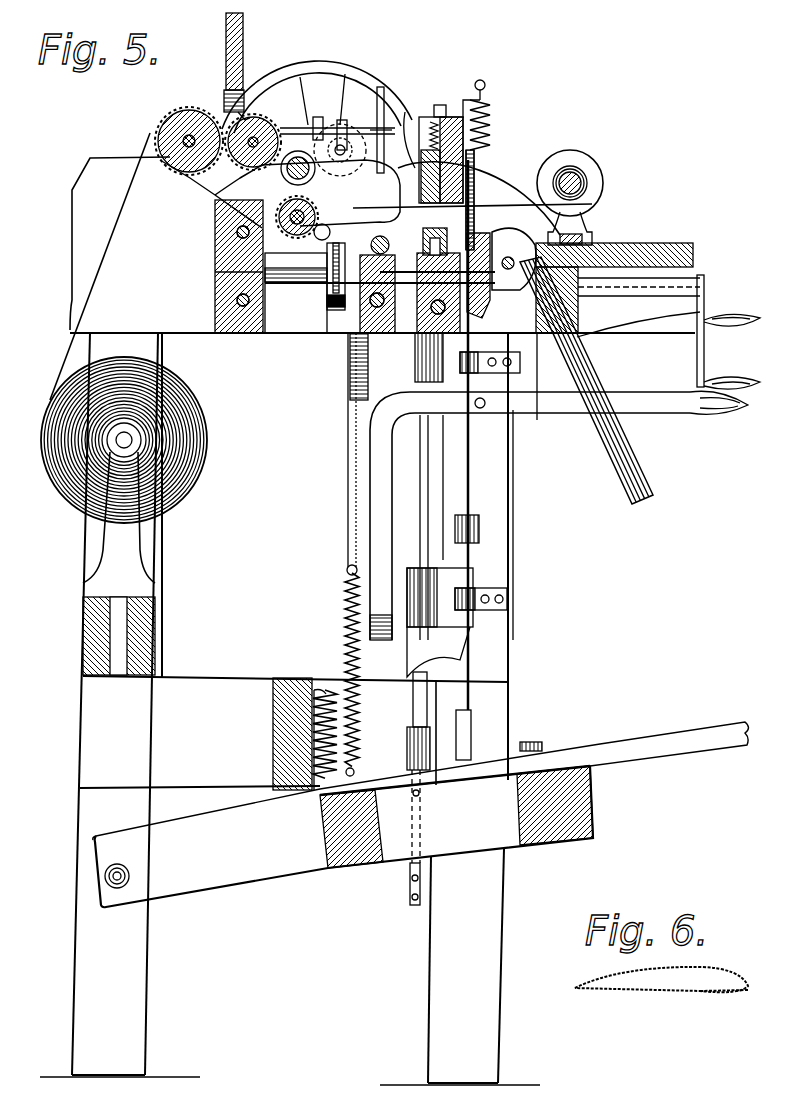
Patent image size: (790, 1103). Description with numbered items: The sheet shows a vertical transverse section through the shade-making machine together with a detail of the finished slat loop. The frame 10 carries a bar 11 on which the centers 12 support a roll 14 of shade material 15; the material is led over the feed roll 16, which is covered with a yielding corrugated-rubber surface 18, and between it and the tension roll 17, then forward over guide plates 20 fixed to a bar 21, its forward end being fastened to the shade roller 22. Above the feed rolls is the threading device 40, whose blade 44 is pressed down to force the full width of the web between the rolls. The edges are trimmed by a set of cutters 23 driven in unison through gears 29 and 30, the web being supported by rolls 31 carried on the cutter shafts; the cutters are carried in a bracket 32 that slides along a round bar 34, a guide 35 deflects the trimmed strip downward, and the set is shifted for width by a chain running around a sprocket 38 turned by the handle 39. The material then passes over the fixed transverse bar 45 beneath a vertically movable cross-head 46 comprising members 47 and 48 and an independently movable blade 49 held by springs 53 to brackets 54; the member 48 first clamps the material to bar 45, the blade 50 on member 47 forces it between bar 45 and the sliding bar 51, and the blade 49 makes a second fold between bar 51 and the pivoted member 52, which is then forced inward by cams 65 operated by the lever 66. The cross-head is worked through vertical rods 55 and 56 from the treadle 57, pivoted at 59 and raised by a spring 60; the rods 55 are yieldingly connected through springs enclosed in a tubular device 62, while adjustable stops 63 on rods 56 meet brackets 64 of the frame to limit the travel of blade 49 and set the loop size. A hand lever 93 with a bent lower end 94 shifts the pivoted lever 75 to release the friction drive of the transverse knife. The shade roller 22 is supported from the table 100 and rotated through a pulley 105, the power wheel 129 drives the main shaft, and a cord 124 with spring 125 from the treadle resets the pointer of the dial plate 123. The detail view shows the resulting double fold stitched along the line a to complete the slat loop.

In FIG. 5, the frame 10 is at (367, 709).
In FIG. 5, the bar 11 is at (157, 645).
In FIG. 5, the center 12 is at (150, 560).
In FIG. 5, the roll of fabric 14 is at (207, 430).
In FIG. 5, the shade material 15 is at (98, 290).
In FIG. 5, the feed roll 16 is at (158, 138).
In FIG. 5, the tension roll 17 is at (248, 112).
In FIG. 5, the yielding surface 18 is at (170, 170).
In FIG. 5, the guide plates 20 is at (215, 200).
In FIG. 5, the fixed bar 21 is at (215, 280).
In FIG. 5, the shade roller 22 is at (590, 188).
In FIG. 5, the set of cutters 23 is at (268, 180).
In FIG. 5, the gear 29 is at (303, 150).
In FIG. 5, the gear 30 is at (294, 234).
In FIG. 5, the rolls 31 is at (304, 257).
In FIG. 5, the bracket 32 is at (340, 174).
In FIG. 5, the round bar 34 is at (382, 240).
In FIG. 5, the guide 35 is at (319, 248).
In FIG. 5, the sprocket 38 is at (338, 310).
In FIG. 5, the handle 39 is at (706, 300).
In FIG. 5, the threading device 40 is at (256, 56).
In FIG. 5, the blade 44 is at (225, 92).
In FIG. 5, the transverse bar 45 is at (418, 340).
In FIG. 5, the cross-head 46 is at (441, 138).
In FIG. 5, the cross-head member 47 is at (490, 130).
In FIG. 5, the clamping member 48 is at (410, 129).
In FIG. 5, the blade 49 is at (478, 182).
In FIG. 5, the blade 50 is at (470, 222).
In FIG. 5, the sliding bar 51 is at (432, 255).
In FIG. 5, the pivoted member 52 is at (488, 305).
In FIG. 5, the springs 53 is at (495, 112).
In FIG. 5, the brackets 54 is at (486, 84).
In FIG. 5, the vertical rods 55 is at (425, 510).
In FIG. 5, the vertical rods 56 is at (472, 484).
In FIG. 5, the treadle 57 is at (628, 742).
In FIG. 5, the pivot 59 is at (105, 876).
In FIG. 5, the spring 60 is at (318, 790).
In FIG. 5, the tubular device 62 is at (407, 745).
In FIG. 5, the adjustable stops 63 is at (480, 530).
In FIG. 5, the brackets 64 is at (515, 590).
In FIG. 5, the cams 65 is at (600, 222).
In FIG. 5, the lever 66 is at (610, 460).
In FIG. 5, the lever 75 is at (347, 545).
In FIG. 5, the lever 93 is at (567, 413).
In FIG. 5, the bent lower end 94 is at (425, 622).
In FIG. 5, the table 100 is at (690, 240).
In FIG. 5, the pulley 105 is at (585, 158).
In FIG. 5, the dial plate 123 is at (385, 95).
In FIG. 5, the flexible connection 124 is at (346, 460).
In FIG. 5, the spring 125 is at (345, 640).
In FIG. 5, the wheel 129 is at (318, 70).
In FIG. 6, the stitching line a is at (702, 1000).